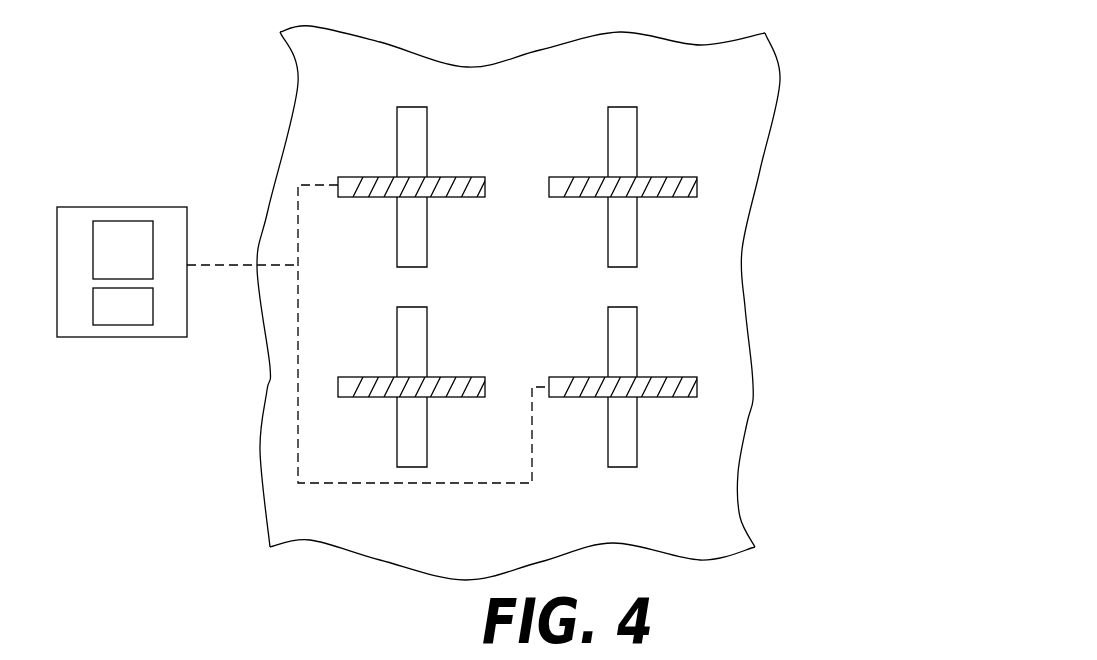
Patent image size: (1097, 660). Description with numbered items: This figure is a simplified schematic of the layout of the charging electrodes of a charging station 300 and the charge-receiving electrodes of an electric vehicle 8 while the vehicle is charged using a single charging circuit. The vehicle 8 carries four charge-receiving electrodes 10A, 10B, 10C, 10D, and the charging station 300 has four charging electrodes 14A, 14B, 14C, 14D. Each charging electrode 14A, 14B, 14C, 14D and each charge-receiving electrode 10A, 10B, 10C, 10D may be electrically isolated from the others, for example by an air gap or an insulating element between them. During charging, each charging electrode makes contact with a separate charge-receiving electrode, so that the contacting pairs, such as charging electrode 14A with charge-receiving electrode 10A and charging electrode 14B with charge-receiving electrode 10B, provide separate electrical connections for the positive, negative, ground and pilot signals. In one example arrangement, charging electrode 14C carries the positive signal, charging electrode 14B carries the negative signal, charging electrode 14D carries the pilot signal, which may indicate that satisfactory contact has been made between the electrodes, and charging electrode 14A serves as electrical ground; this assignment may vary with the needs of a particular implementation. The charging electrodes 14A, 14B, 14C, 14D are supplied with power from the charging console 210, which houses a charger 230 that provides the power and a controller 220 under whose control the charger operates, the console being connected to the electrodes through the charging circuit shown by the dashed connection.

The vehicle 8 is at (752, 393).
The charging station 300 is at (795, 225).
The charge-receiving electrode 10A is at (427, 443).
The charge-receiving electrode 10B is at (637, 443).
The charge-receiving electrode 10C is at (397, 117).
The charge-receiving electrode 10D is at (608, 117).
The charging electrode 14A is at (445, 376).
The charging electrode 14B is at (670, 376).
The charging electrode 14C is at (357, 199).
The charging electrode 14D is at (580, 199).
The charging console 210 is at (70, 207).
The controller 220 is at (107, 315).
The charger 230 is at (107, 262).